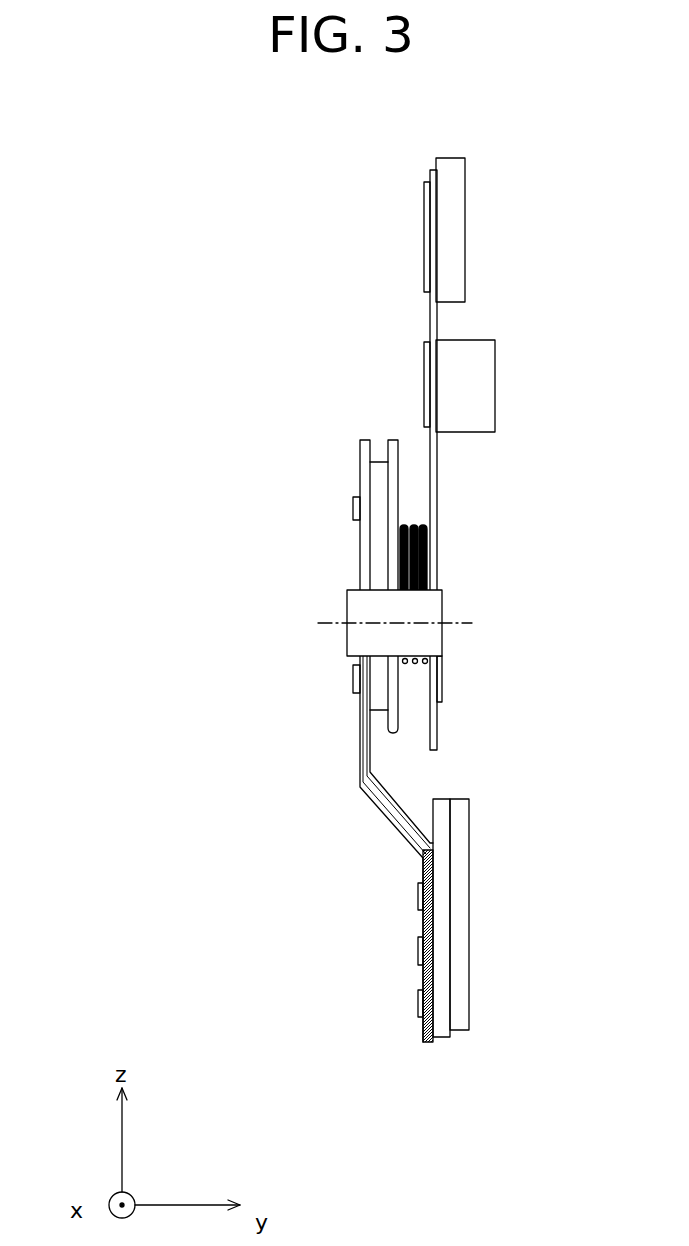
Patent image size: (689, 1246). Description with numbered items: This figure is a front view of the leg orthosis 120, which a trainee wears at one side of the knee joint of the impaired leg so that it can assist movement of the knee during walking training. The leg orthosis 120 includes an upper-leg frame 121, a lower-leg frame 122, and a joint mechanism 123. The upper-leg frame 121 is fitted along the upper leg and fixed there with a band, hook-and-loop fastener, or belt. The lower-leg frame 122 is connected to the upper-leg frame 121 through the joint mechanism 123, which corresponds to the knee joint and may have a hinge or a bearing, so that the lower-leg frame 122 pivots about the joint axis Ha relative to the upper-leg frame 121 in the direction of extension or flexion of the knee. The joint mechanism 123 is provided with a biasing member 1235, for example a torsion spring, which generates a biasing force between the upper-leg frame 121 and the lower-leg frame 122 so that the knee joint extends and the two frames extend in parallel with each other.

The leg orthosis 120 is at (97, 161).
The upper-leg frame 121 is at (458, 213).
The lower-leg frame 122 is at (465, 930).
The joint mechanism 123 is at (360, 553).
The biasing member 1235 is at (428, 543).
The joint axis Ha is at (460, 624).